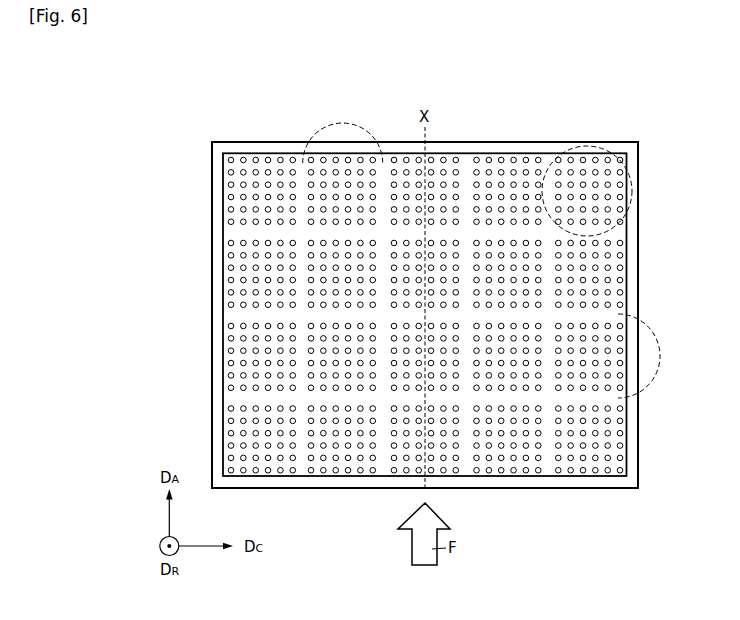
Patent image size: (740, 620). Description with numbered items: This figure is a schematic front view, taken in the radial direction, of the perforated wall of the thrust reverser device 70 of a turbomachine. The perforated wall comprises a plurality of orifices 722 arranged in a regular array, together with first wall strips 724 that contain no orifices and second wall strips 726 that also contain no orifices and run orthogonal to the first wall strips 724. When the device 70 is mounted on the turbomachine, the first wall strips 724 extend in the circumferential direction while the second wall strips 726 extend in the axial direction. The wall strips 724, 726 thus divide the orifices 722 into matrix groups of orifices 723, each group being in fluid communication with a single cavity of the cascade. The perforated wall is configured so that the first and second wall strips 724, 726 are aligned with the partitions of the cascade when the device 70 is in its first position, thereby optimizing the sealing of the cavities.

The thrust reverser device 70 is at (451, 280).
The orifices 722 is at (621, 222).
The matrix groups of orifices 723 is at (628, 163).
The first wall strips 724 is at (648, 356).
The second wall strips 726 is at (343, 139).